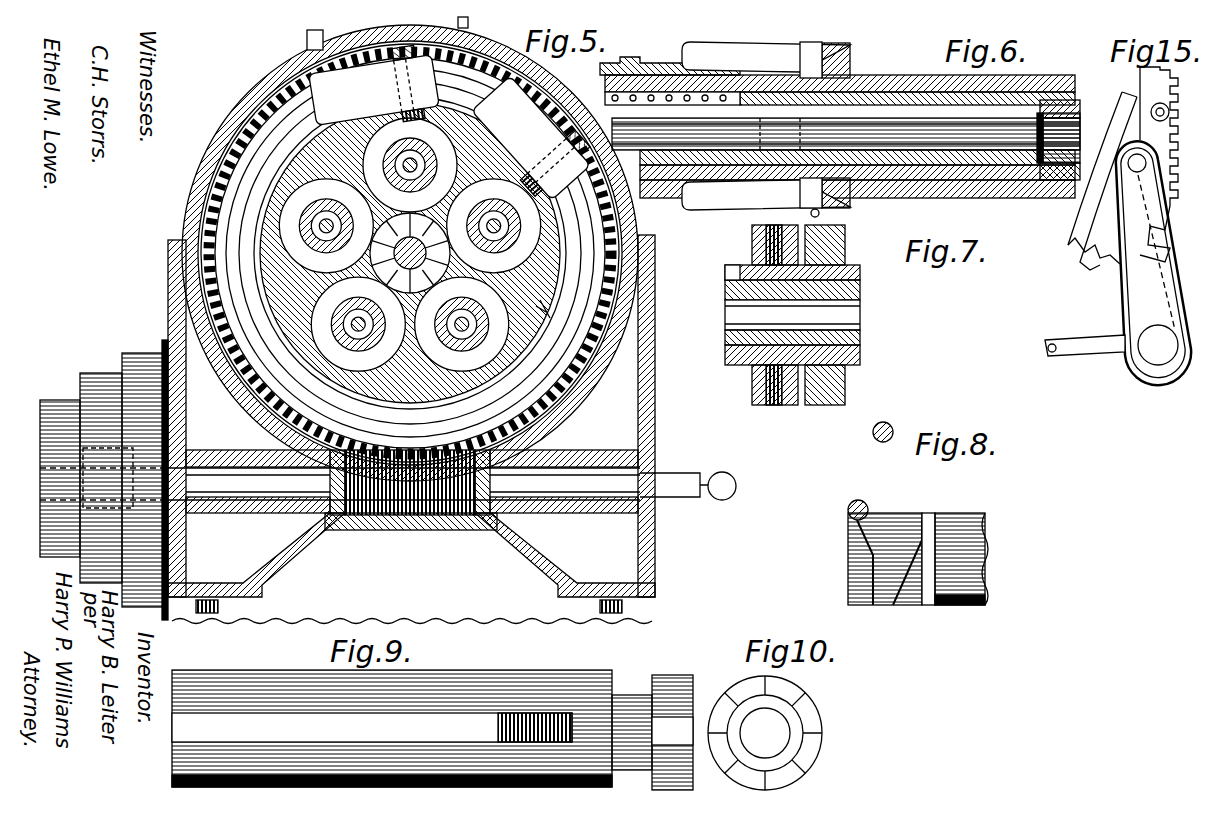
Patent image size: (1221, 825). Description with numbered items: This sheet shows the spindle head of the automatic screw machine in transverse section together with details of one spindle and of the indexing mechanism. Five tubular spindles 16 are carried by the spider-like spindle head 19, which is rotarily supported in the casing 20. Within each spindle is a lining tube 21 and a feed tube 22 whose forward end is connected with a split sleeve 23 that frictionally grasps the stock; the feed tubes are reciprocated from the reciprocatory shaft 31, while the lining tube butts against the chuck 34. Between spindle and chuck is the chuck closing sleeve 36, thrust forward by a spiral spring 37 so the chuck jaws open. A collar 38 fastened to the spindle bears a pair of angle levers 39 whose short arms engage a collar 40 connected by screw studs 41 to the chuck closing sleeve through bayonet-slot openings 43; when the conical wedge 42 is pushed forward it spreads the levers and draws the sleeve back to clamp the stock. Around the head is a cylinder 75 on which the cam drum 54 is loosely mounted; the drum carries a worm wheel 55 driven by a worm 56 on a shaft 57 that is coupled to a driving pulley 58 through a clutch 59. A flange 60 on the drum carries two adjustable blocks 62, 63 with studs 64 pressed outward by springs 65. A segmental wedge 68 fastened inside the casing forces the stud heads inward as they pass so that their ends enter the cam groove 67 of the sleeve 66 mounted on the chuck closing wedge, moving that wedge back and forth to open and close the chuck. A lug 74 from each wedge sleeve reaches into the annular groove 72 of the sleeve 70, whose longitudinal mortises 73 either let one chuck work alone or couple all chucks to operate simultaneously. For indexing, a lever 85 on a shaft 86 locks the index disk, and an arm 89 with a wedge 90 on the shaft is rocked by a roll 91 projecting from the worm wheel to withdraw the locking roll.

In FIG. 5, the tubular spindle 16 is at (330, 210).
In FIG. 6, the tubular spindle 16 is at (892, 75).
In FIG. 7, the tubular spindle 16 is at (862, 360).
In FIG. 5, the spindle head 19 is at (400, 395).
In FIG. 5, the casing 20 is at (237, 101).
In FIG. 5, the lining tube 21 is at (300, 220).
In FIG. 6, the lining tube 21 is at (920, 190).
In FIG. 7, the lining tube 21 is at (862, 336).
In FIG. 5, the feed tube 22 is at (313, 233).
In FIG. 6, the feed tube 22 is at (876, 190).
In FIG. 7, the feed tube 22 is at (862, 298).
In FIG. 6, the split sleeve 23 is at (1020, 190).
In FIG. 5, the reciprocatory shaft 31 is at (520, 242).
In FIG. 6, the chuck 34 is at (1058, 182).
In FIG. 6, the chuck closing sleeve 36 is at (972, 200).
In FIG. 7, the chuck closing sleeve 36 is at (862, 282).
In FIG. 6, the spiral spring 37 is at (660, 198).
In FIG. 6, the collar 38 is at (850, 60).
In FIG. 7, the collar 38 is at (846, 386).
In FIG. 6, the angle lever 39 is at (755, 45).
In FIG. 6, the collar 40 is at (800, 205).
In FIG. 7, the collar 40 is at (752, 385).
In FIG. 6, the screw stud 41 is at (805, 200).
In FIG. 7, the screw stud 41 is at (775, 406).
In FIG. 5, the conical wedge 42 is at (307, 252).
In FIG. 6, the conical wedge 42 is at (652, 66).
In FIG. 6, the opening 43 is at (730, 128).
In FIG. 7, the opening 43 is at (740, 272).
In FIG. 5, the cam drum 54 is at (186, 298).
In FIG. 5, the worm wheel 55 is at (560, 400).
In FIG. 15, the worm wheel 55 is at (1088, 256).
In FIG. 5, the worm 56 is at (425, 522).
In FIG. 5, the shaft 57 is at (265, 505).
In FIG. 5, the driving pulley 58 is at (106, 379).
In FIG. 5, the clutch 59 is at (245, 450).
In FIG. 5, the flange 60 is at (235, 128).
In FIG. 5, the block 62 is at (374, 89).
In FIG. 5, the block 63 is at (531, 137).
In FIG. 5, the stud 64 is at (446, 111).
In FIG. 8, the stud 64 is at (860, 500).
In FIG. 5, the spring 65 is at (462, 109).
In FIG. 5, the sleeve 66 is at (479, 87).
In FIG. 8, the sleeve 66 is at (960, 606).
In FIG. 5, the cam groove 67 is at (456, 98).
In FIG. 8, the cam groove 67 is at (884, 606).
In FIG. 5, the segmental wedge 68 is at (318, 54).
In FIG. 5, the sleeve 70 is at (540, 262).
In FIG. 9, the sleeve 70 is at (392, 728).
In FIG. 10, the sleeve 70 is at (800, 696).
In FIG. 9, the annular groove 72 is at (652, 729).
In FIG. 10, the annular groove 72 is at (806, 736).
In FIG. 9, the longitudinal mortise 73 is at (672, 731).
In FIG. 10, the longitudinal mortise 73 is at (808, 711).
In FIG. 5, the lug 74 is at (548, 312).
In FIG. 5, the cylinder 75 is at (185, 276).
In FIG. 15, the lever 85 is at (1153, 263).
In FIG. 15, the shaft 86 is at (1158, 345).
In FIG. 15, the arm 89 is at (1128, 280).
In FIG. 15, the wedge 90 is at (1122, 140).
In FIG. 15, the roll 91 is at (1128, 88).